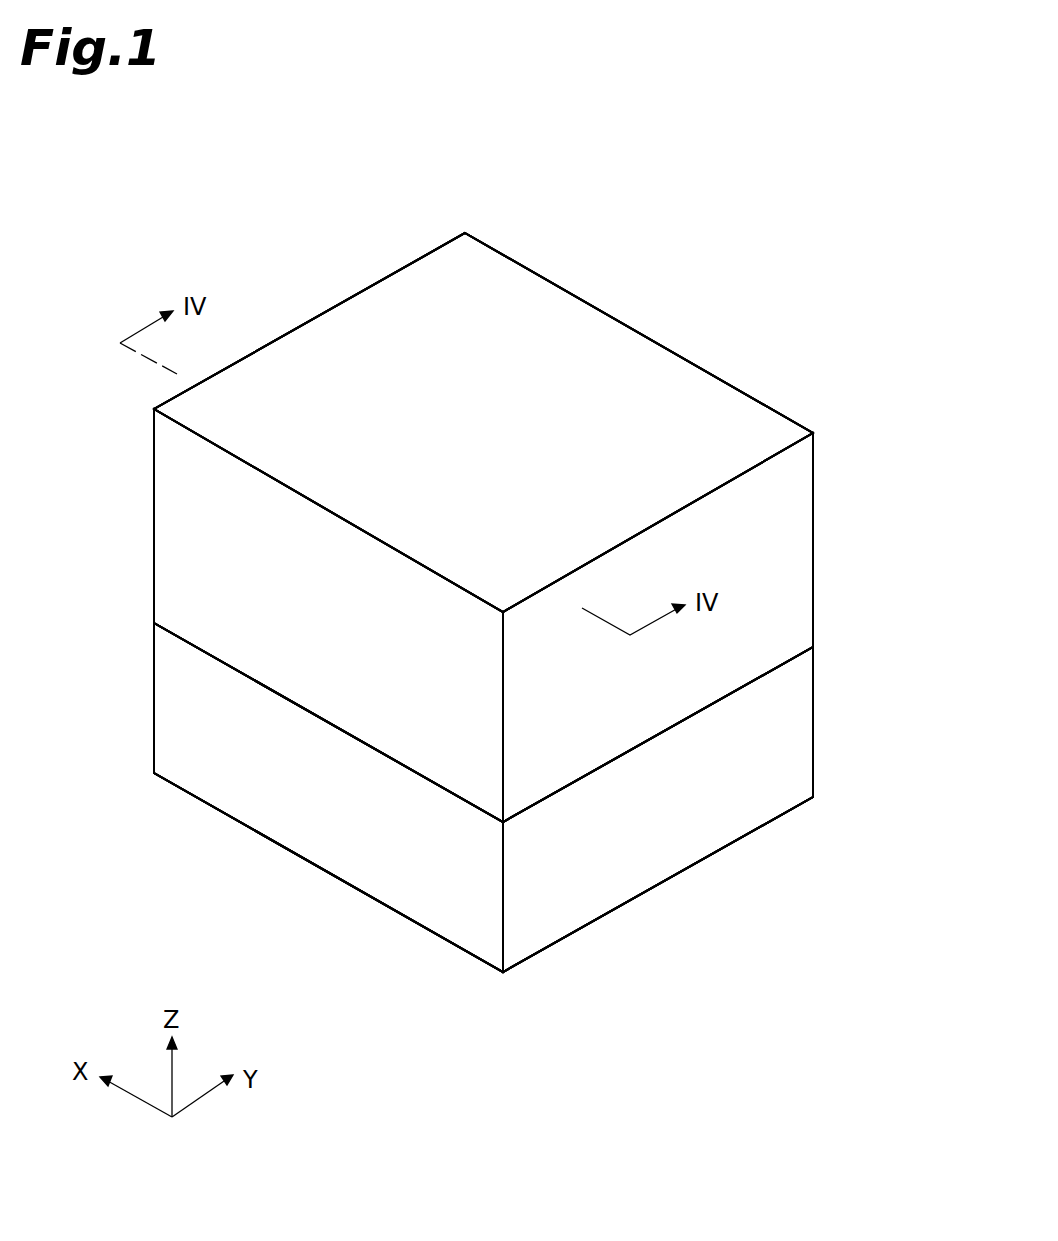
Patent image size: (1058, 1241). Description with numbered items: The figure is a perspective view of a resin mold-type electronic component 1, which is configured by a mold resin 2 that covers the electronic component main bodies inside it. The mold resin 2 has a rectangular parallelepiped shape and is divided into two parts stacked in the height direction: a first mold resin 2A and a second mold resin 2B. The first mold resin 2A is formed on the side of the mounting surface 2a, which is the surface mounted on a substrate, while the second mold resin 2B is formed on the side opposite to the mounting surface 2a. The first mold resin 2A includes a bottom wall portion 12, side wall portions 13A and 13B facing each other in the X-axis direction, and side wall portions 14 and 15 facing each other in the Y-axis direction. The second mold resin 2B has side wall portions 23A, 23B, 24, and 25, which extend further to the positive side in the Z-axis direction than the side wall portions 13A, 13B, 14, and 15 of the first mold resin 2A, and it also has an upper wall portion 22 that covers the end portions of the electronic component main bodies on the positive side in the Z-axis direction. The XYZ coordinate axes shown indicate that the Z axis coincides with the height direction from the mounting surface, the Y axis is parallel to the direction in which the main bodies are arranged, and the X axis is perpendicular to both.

The resin mold-type electronic component 1 is at (263, 199).
The mold resin 2 is at (796, 384).
The first mold resin 2A is at (817, 681).
The second mold resin 2B is at (817, 489).
The mounting surface 2a is at (618, 910).
The bottom wall portion 12 is at (350, 888).
The side wall portion 13A is at (154, 692).
The side wall portion 13B is at (743, 808).
The side wall portion 14 is at (815, 722).
The side wall portion 15 is at (270, 817).
The upper wall portion 22 is at (565, 317).
The side wall portion 23A is at (357, 292).
The side wall portion 23B is at (792, 573).
The side wall portion 24 is at (668, 349).
The side wall portion 25 is at (187, 577).